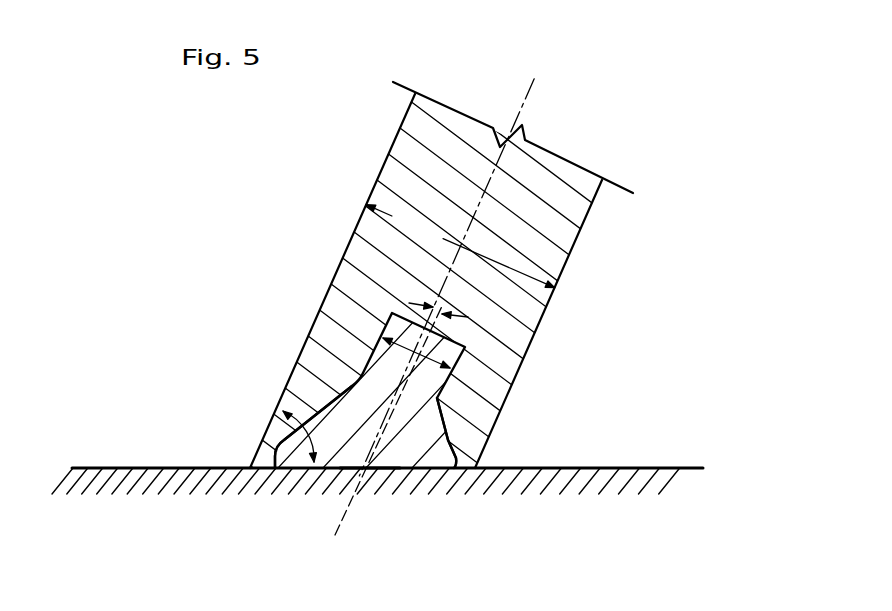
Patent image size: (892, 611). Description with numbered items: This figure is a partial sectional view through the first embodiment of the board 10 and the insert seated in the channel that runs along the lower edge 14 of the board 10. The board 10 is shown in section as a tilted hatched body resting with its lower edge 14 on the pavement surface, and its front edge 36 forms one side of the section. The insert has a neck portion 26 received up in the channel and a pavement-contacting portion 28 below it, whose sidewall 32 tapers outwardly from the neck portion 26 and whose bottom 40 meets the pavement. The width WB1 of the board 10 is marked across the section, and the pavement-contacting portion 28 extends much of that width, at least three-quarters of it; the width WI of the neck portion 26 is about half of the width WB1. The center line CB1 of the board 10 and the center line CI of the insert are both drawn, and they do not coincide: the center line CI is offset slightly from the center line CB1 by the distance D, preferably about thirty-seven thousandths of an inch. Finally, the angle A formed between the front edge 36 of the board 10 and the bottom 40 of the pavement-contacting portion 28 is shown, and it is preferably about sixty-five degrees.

The board 10 is at (606, 277).
The lower edge 14 is at (469, 469).
The neck portion 26 is at (401, 311).
The pavement-contacting portion 28 is at (366, 470).
The sidewall 32 is at (449, 436).
The front edge 36 is at (308, 338).
The bottom 40 is at (310, 471).
The angle A is at (292, 421).
The distance D is at (468, 317).
The width of the neck portion WI is at (452, 369).
The width of the board WB1 is at (460, 246).
The center line of the board CB1 is at (532, 93).
The center line of the insert CI is at (337, 531).